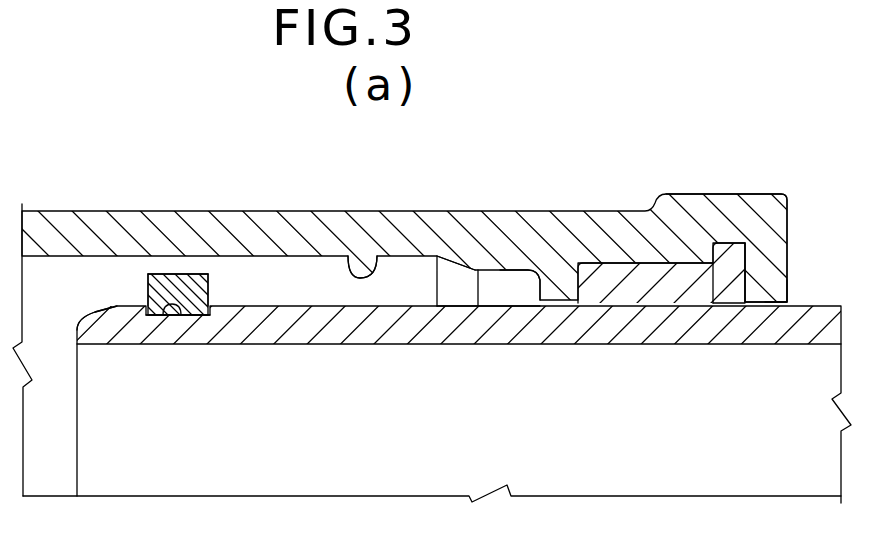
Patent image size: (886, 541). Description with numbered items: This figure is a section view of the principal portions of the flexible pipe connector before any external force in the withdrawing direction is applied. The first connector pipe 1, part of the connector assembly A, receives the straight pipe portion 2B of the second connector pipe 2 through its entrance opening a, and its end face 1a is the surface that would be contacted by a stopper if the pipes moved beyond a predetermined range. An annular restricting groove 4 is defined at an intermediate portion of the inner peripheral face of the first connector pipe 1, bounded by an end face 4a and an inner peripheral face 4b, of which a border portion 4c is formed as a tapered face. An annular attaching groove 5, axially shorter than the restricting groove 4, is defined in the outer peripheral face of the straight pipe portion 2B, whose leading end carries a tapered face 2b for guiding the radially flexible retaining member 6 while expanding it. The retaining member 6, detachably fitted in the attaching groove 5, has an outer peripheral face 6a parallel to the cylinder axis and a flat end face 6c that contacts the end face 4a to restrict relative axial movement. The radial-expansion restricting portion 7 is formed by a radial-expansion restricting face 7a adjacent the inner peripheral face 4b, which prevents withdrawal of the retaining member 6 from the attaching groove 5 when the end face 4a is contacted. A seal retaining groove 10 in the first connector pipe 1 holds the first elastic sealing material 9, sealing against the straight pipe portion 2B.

The first connector pipe 1 is at (303, 210).
The rail assembly A is at (443, 214).
The end face of the first connector pipe 1a is at (786, 220).
The second connector pipe 2 is at (469, 393).
The straight pipe portion 2B is at (587, 343).
The tapered face 2b is at (93, 312).
The restricting groove 4 is at (325, 268).
The end face of the restricting groove 4a is at (543, 300).
The inner peripheral face of the restricting groove 4b is at (380, 257).
The border portion 4c is at (461, 268).
The attaching groove 5 is at (183, 316).
The retaining member 6 is at (187, 293).
The outer peripheral face of the retaining member 6a is at (163, 273).
The end face of the retaining member 6c is at (148, 288).
The radial-expansion restricting portion 7 is at (488, 343).
The radial-expansion restricting face 7a is at (498, 270).
The first elastic sealing material 9 is at (683, 290).
The seal retaining groove 10 is at (643, 270).
The entrance opening a is at (796, 297).